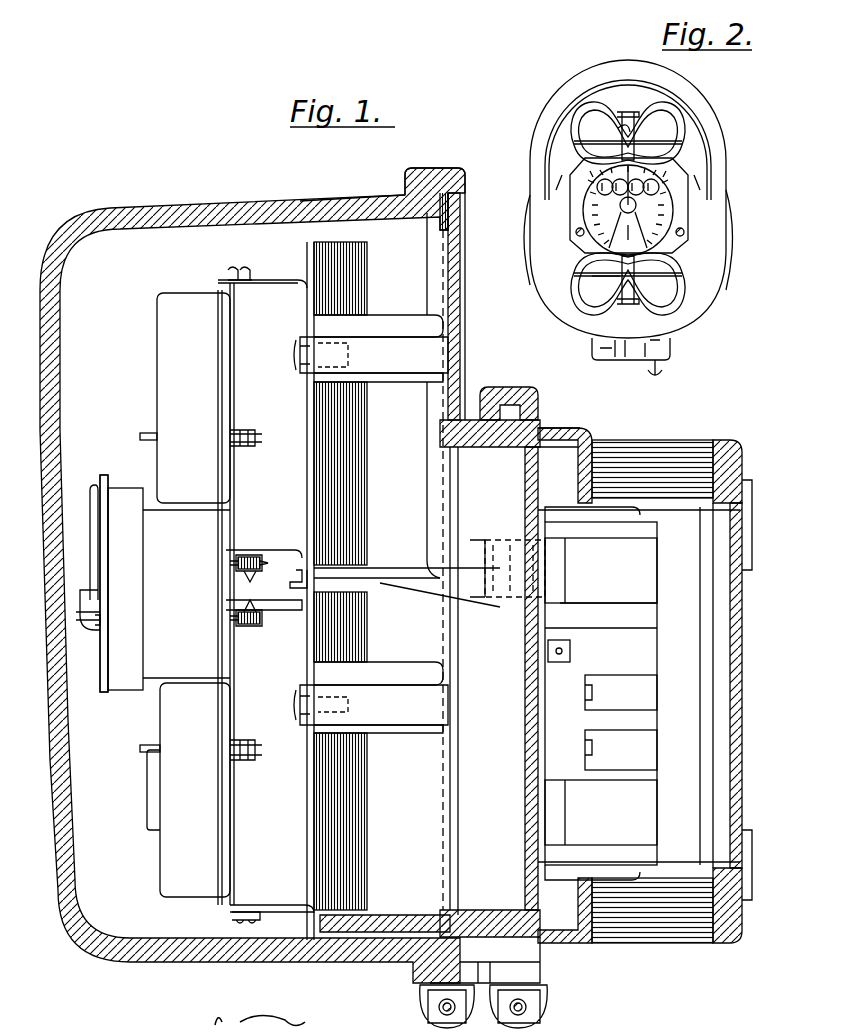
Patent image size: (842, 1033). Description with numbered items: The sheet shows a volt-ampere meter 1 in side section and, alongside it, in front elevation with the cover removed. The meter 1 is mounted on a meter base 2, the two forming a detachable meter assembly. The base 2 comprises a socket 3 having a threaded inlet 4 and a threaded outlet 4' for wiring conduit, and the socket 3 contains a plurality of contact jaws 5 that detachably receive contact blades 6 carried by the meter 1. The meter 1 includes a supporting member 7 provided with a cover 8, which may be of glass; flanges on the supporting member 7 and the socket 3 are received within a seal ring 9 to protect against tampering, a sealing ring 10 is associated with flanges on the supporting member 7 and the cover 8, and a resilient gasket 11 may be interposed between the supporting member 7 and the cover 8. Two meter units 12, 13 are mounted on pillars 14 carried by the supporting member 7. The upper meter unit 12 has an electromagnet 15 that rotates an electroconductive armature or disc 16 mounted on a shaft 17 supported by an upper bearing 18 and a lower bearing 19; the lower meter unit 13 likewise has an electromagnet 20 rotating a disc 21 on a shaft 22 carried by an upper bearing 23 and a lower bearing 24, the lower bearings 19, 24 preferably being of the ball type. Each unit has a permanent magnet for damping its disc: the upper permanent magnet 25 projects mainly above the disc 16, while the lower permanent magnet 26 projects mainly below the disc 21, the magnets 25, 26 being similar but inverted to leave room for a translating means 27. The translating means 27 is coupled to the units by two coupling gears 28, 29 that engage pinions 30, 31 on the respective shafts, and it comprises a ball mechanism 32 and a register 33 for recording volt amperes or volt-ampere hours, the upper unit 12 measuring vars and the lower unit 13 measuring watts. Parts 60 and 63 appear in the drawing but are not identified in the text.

In FIG. 1, the meter 1 is at (236, 193).
In FIG. 2, the meter 1 is at (735, 85).
In FIG. 1, the meter base 2 is at (582, 412).
In FIG. 1, the socket 3 is at (588, 436).
In FIG. 1, the threaded inlet 4 is at (672, 660).
In FIG. 1, the threaded outlet 4' is at (667, 922).
In FIG. 1, the contact jaws 5 is at (620, 540).
In FIG. 1, the contact blades 6 is at (556, 596).
In FIG. 1, the supporting member 7 is at (462, 296).
In FIG. 1, the cover 8 is at (340, 208).
In FIG. 1, the seal ring 9 is at (508, 395).
In FIG. 2, the seal ring 9 is at (734, 228).
In FIG. 1, the sealing ring 10 is at (440, 170).
In FIG. 2, the sealing ring 10 is at (712, 137).
In FIG. 1, the resilient gasket 11 is at (450, 205).
In FIG. 1, the upper meter unit 12 is at (286, 273).
In FIG. 1, the lower meter unit 13 is at (298, 925).
In FIG. 1, the pillars 14 is at (405, 316).
In FIG. 1, the electromagnet 15 is at (368, 455).
In FIG. 2, the electromagnet 15 is at (608, 138).
In FIG. 1, the electroconductive armature or disc 16 is at (142, 434).
In FIG. 1, the shaft 17 is at (245, 448).
In FIG. 1, the upper bearing 18 is at (226, 272).
In FIG. 1, the lower bearing 19 is at (254, 583).
In FIG. 1, the electromagnet 20 is at (368, 785).
In FIG. 1, the electroconductive armature or disc 21 is at (140, 750).
In FIG. 2, the electroconductive armature or disc 21 is at (606, 283).
In FIG. 1, the shaft 22 is at (245, 762).
In FIG. 1, the upper bearing 23 is at (254, 606).
In FIG. 1, the lower bearing 24 is at (232, 920).
In FIG. 1, the upper permanent magnet 25 is at (157, 357).
In FIG. 2, the upper permanent magnet 25 is at (660, 115).
In FIG. 1, the lower permanent magnet 26 is at (160, 884).
In FIG. 2, the lower permanent magnet 26 is at (678, 272).
In FIG. 1, the translating means 27 is at (128, 692).
In FIG. 2, the translating means 27 is at (674, 210).
In FIG. 1, the coupling gear 28 is at (236, 568).
In FIG. 1, the coupling gear 29 is at (236, 620).
In FIG. 1, the pinion 30 is at (254, 564).
In FIG. 1, the pinion 31 is at (255, 627).
In FIG. 1, the ball mechanism 32 is at (181, 535).
In FIG. 1, the register 33 is at (134, 535).
In FIG. 2, the register 33 is at (583, 178).
In FIG. 1, the clip 60 is at (98, 672).
In FIG. 1, the spring plate 63 is at (92, 545).